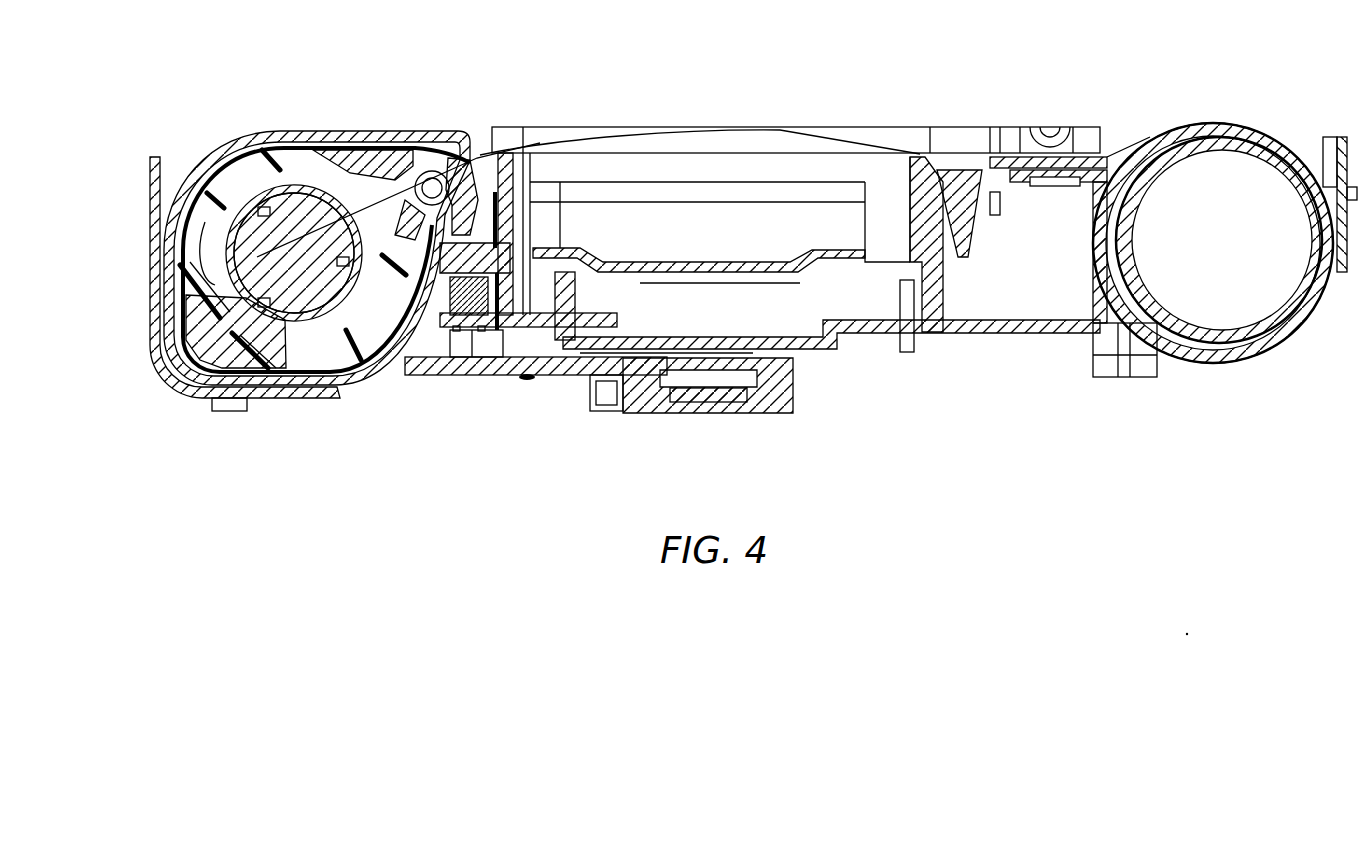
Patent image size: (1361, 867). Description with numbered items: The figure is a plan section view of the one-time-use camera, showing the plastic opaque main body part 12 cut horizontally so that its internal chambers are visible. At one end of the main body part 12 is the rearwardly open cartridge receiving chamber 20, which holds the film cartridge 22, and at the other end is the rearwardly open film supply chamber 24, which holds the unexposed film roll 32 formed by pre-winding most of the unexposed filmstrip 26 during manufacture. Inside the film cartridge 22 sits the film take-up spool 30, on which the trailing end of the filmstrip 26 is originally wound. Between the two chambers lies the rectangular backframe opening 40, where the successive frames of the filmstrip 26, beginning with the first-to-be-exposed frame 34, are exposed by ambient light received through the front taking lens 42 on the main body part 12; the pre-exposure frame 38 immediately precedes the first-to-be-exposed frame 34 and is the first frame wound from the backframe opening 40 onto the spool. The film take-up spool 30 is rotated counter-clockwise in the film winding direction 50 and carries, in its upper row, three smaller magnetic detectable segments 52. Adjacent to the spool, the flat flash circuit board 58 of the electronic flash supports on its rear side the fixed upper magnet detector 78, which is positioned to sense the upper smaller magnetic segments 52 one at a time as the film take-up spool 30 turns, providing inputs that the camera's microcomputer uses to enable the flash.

The main body part 12 is at (280, 250).
The cartridge receiving chamber 20 is at (177, 177).
The film cartridge 22 is at (205, 148).
The film supply chamber 24 is at (1310, 150).
The unexposed filmstrip 26 is at (548, 142).
The film take-up spool 30 is at (300, 205).
The unexposed film roll 32 is at (1247, 130).
The first-to-be-exposed frame 34 is at (1213, 121).
The pre-exposure frame 38 is at (653, 132).
The backframe opening 40 is at (845, 157).
The front taking lens 42 is at (707, 397).
The film winding direction 50 is at (178, 292).
The upper smaller magnetic segments 52 is at (247, 215).
The flash circuit board 58 is at (455, 335).
The upper magnet detector 78 is at (480, 325).